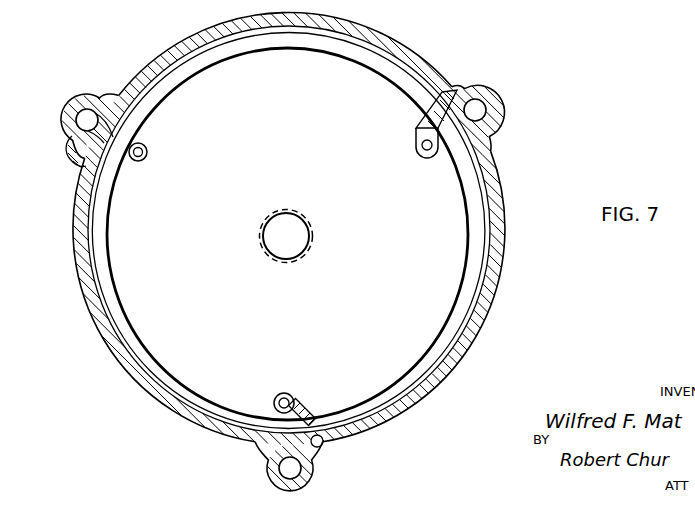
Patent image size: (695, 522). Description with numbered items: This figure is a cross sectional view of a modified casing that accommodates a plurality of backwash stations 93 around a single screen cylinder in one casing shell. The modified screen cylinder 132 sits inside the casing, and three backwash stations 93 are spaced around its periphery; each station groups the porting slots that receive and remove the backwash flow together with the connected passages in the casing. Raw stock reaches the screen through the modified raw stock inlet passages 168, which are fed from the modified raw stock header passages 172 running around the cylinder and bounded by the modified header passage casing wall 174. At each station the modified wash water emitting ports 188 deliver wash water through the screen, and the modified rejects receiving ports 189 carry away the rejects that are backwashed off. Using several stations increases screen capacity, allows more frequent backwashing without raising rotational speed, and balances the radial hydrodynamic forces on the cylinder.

The backwash station 93 is at (65, 95).
The modified screen cylinder 132 is at (458, 301).
The modified raw stock inlet passages 168 is at (85, 118).
The modified raw stock header passages 172 is at (165, 93).
The modified header passage casing wall 174 is at (152, 76).
The modified wash water emitting ports 188 is at (140, 162).
The modified rejects receiving ports 189 is at (72, 160).